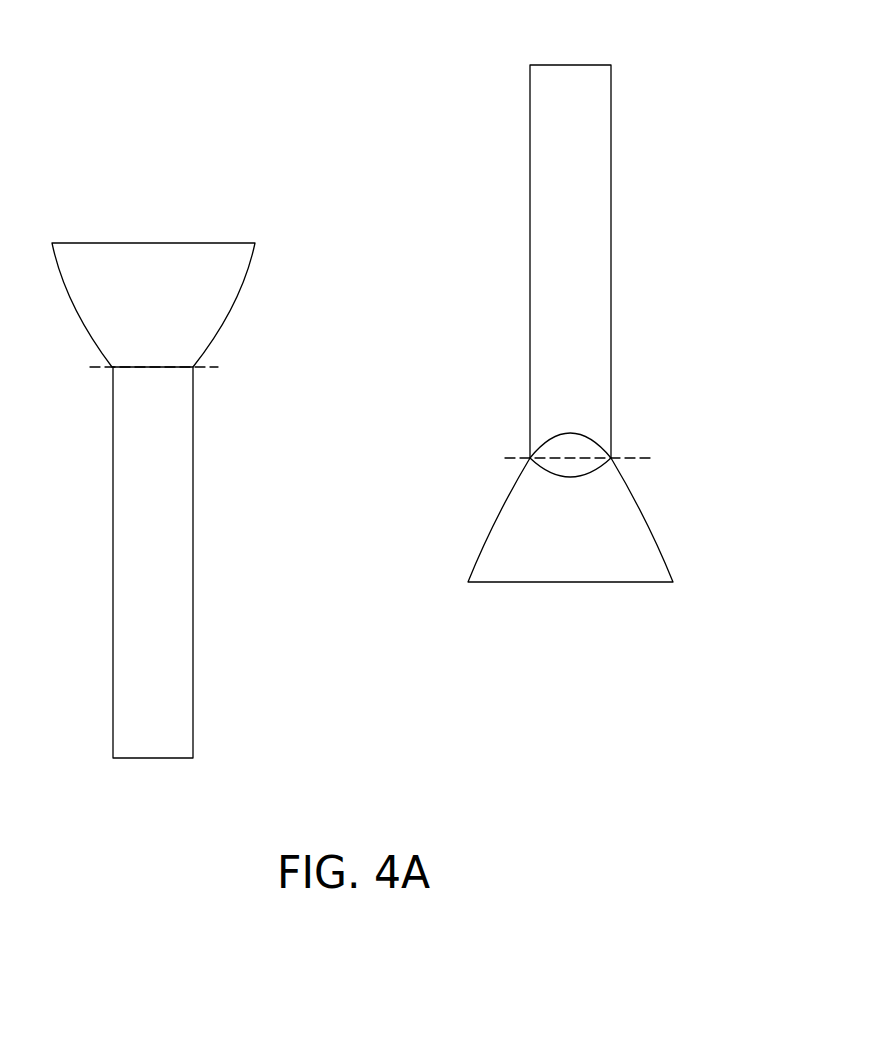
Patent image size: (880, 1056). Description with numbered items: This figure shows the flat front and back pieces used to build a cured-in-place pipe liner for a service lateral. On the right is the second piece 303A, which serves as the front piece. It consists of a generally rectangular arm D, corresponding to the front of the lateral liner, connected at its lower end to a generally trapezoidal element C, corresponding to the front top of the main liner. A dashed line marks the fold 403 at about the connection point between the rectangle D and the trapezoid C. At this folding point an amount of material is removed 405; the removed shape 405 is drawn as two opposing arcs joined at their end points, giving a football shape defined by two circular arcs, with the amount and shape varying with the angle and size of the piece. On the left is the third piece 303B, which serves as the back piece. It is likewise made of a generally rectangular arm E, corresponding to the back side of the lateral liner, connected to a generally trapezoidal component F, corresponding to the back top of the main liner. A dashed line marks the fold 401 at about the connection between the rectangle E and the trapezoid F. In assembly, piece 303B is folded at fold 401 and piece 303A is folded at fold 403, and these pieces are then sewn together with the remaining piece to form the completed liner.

The second piece 303A is at (613, 358).
The third piece 303B is at (184, 453).
The fold 401 is at (98, 368).
The fold 403 is at (640, 458).
The removed material 405 is at (558, 448).
The trapezoidal element C is at (562, 563).
The rectangular arm D is at (597, 322).
The rectangular arm E is at (125, 552).
The trapezoidal component F is at (100, 262).